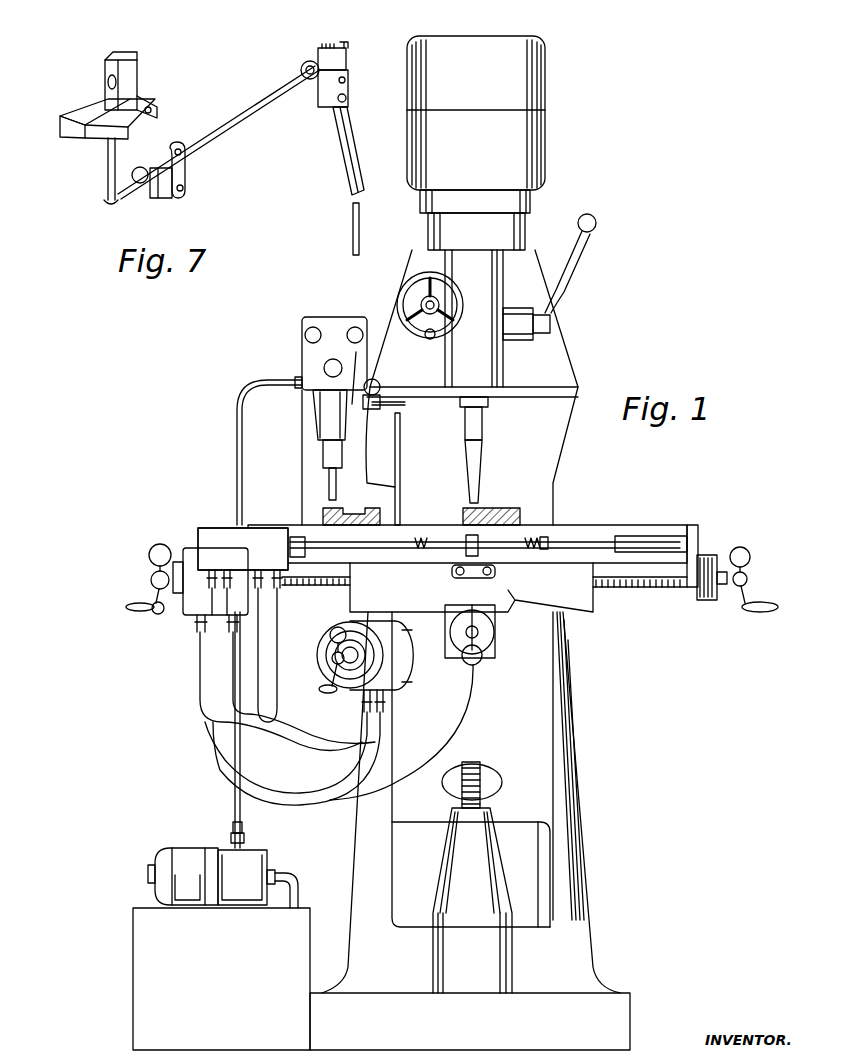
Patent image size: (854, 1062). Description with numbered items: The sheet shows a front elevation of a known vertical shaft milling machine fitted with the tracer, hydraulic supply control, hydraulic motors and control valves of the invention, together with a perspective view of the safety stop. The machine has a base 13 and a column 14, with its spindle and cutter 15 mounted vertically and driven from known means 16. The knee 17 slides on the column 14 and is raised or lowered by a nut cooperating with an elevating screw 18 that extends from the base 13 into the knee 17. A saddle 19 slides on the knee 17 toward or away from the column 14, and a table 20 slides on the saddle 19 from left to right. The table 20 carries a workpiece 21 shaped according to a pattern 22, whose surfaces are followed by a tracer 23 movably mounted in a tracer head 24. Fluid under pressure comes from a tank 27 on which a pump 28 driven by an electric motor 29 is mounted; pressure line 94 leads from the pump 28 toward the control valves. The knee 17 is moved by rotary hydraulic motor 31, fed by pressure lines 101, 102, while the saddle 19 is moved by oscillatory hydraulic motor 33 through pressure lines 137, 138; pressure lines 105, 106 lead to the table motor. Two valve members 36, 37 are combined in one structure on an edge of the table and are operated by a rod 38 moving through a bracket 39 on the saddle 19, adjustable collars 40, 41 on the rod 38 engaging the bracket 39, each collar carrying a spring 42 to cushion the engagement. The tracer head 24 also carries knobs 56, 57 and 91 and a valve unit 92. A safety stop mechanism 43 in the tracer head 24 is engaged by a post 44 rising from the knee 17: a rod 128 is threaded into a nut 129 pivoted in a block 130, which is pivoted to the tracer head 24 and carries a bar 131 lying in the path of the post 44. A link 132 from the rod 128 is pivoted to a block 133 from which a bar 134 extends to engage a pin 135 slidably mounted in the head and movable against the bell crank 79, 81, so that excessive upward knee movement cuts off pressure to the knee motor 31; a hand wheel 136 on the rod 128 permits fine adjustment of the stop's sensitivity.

In FIG. 1, the base 13 is at (628, 1000).
In FIG. 1, the column 14 is at (575, 720).
In FIG. 1, the spindle and cutter 15 is at (480, 470).
In FIG. 1, the known means 16 is at (518, 140).
In FIG. 1, the knee 17 is at (540, 763).
In FIG. 1, the elevating screw 18 is at (482, 790).
In FIG. 1, the saddle 19 is at (588, 612).
In FIG. 1, the table 20 is at (632, 525).
In FIG. 1, the workpiece 21 is at (520, 512).
In FIG. 1, the pattern 22 is at (322, 514).
In FIG. 1, the tracer 23 is at (328, 483).
In FIG. 1, the tracer head 24 is at (298, 360).
In FIG. 1, the tank 27 is at (146, 953).
In FIG. 1, the pump 28 is at (248, 858).
In FIG. 1, the electric motor 29 is at (182, 858).
In FIG. 1, the hydraulic motor 31 is at (358, 688).
In FIG. 1, the hydraulic motor 33 is at (496, 640).
In FIG. 1, the valve member 36 is at (200, 540).
In FIG. 1, the valve member 37 is at (243, 549).
In FIG. 1, the rod 38 is at (370, 548).
In FIG. 1, the bracket 39 is at (452, 572).
In FIG. 1, the adjustable collar 40 is at (466, 552).
In FIG. 1, the adjustable collar 41 is at (543, 551).
In FIG. 1, the spring 42 is at (420, 540).
In FIG. 7, the safety stop mechanism 43 is at (254, 87).
In FIG. 1, the safety stop mechanism 43 is at (390, 381).
In FIG. 7, the post 44 is at (359, 210).
In FIG. 1, the post 44 is at (401, 453).
In FIG. 1, the control knob 56 is at (304, 336).
In FIG. 1, the control knob 57 is at (360, 330).
In FIG. 7, the bell crank 79 is at (68, 112).
In FIG. 7, the bell crank 81 is at (132, 74).
In FIG. 1, the control knob 91 is at (326, 373).
In FIG. 1, the control valve 92 is at (190, 613).
In FIG. 1, the pressure line 94 is at (234, 778).
In FIG. 1, the pressure line 101 is at (352, 770).
In FIG. 1, the pressure line 102 is at (345, 762).
In FIG. 1, the pressure line 105 is at (200, 664).
In FIG. 1, the pressure line 106 is at (233, 672).
In FIG. 7, the rod 128 is at (242, 128).
In FIG. 7, the nut 129 is at (332, 46).
In FIG. 7, the block 130 is at (352, 76).
In FIG. 7, the bar 131 is at (352, 140).
In FIG. 1, the bar 131 is at (406, 405).
In FIG. 7, the link 132 is at (186, 174).
In FIG. 7, the block 133 is at (163, 198).
In FIG. 7, the bar 134 is at (106, 206).
In FIG. 1, the bar 134 is at (355, 412).
In FIG. 7, the pin 135 is at (106, 175).
In FIG. 1, the pin 135 is at (360, 352).
In FIG. 7, the hand wheel 136 is at (145, 167).
In FIG. 1, the hand wheel 136 is at (380, 388).
In FIG. 1, the pressure line 137 is at (405, 775).
In FIG. 1, the pressure line 138 is at (418, 786).